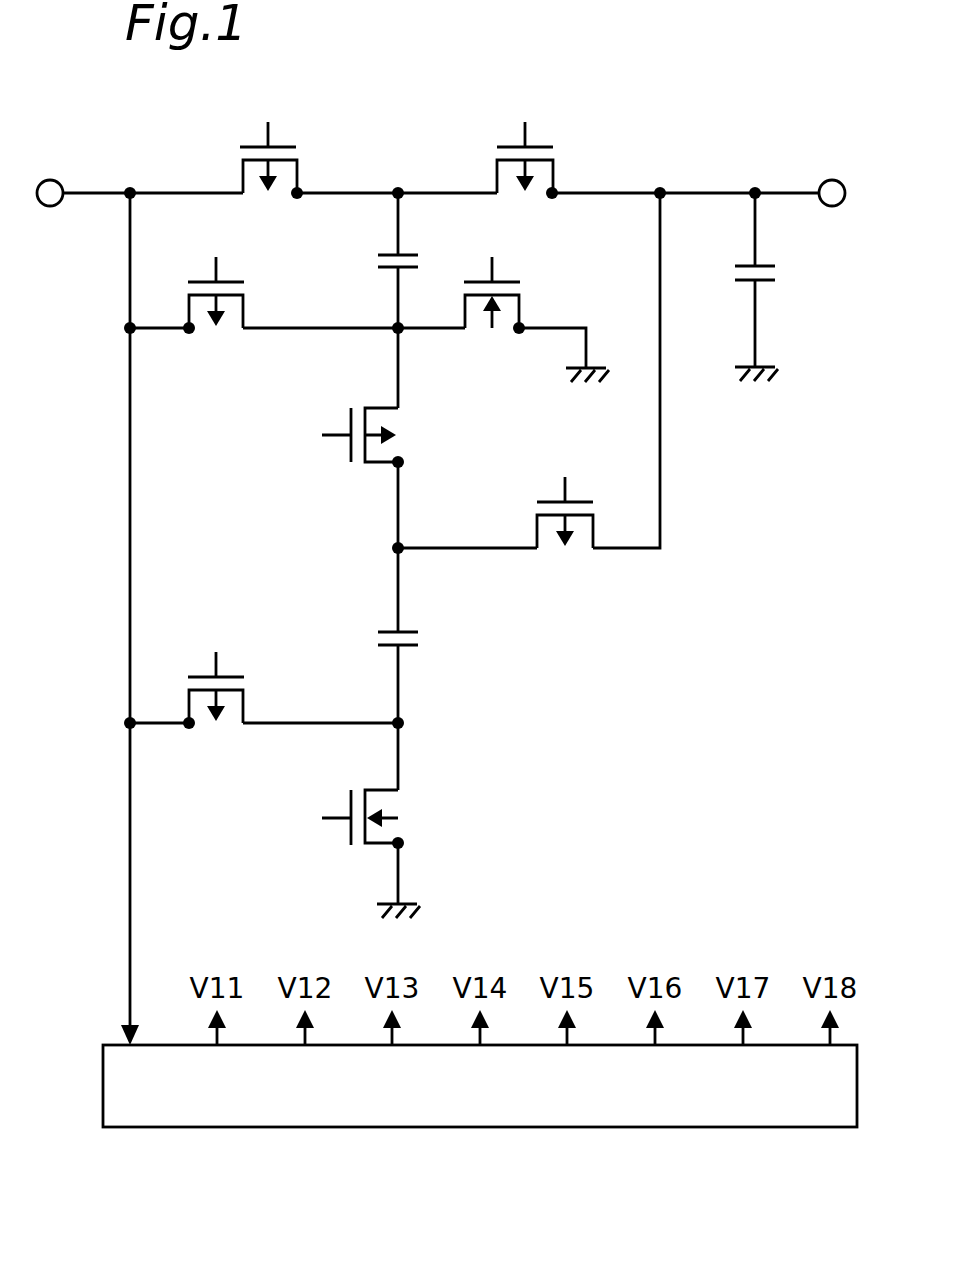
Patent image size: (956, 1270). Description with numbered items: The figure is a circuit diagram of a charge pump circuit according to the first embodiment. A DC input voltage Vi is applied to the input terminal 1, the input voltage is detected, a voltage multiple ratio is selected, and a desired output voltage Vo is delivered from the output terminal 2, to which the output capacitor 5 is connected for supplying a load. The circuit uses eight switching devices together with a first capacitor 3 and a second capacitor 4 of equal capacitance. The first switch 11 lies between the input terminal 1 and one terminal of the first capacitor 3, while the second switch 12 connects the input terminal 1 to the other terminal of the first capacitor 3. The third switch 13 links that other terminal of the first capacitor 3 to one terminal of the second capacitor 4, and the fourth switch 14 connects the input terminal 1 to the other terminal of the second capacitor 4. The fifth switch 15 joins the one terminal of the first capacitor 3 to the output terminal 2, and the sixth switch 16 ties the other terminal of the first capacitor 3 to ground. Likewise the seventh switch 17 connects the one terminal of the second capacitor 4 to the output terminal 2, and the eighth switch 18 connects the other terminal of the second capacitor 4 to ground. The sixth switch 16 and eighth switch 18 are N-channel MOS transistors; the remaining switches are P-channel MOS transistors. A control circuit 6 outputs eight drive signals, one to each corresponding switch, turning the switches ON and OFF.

The input terminal 1 is at (50, 180).
The output terminal 2 is at (832, 180).
The first capacitor 3 is at (378, 263).
The second capacitor 4 is at (420, 635).
The output capacitor 5 is at (777, 273).
The control circuit 6 is at (103, 1068).
The first switch 11 is at (299, 177).
The second switch 12 is at (217, 334).
The third switch 13 is at (404, 436).
The fourth switch 14 is at (245, 700).
The fifth switch 15 is at (533, 196).
The sixth switch 16 is at (493, 333).
The seventh switch 17 is at (560, 551).
The eighth switch 18 is at (400, 805).